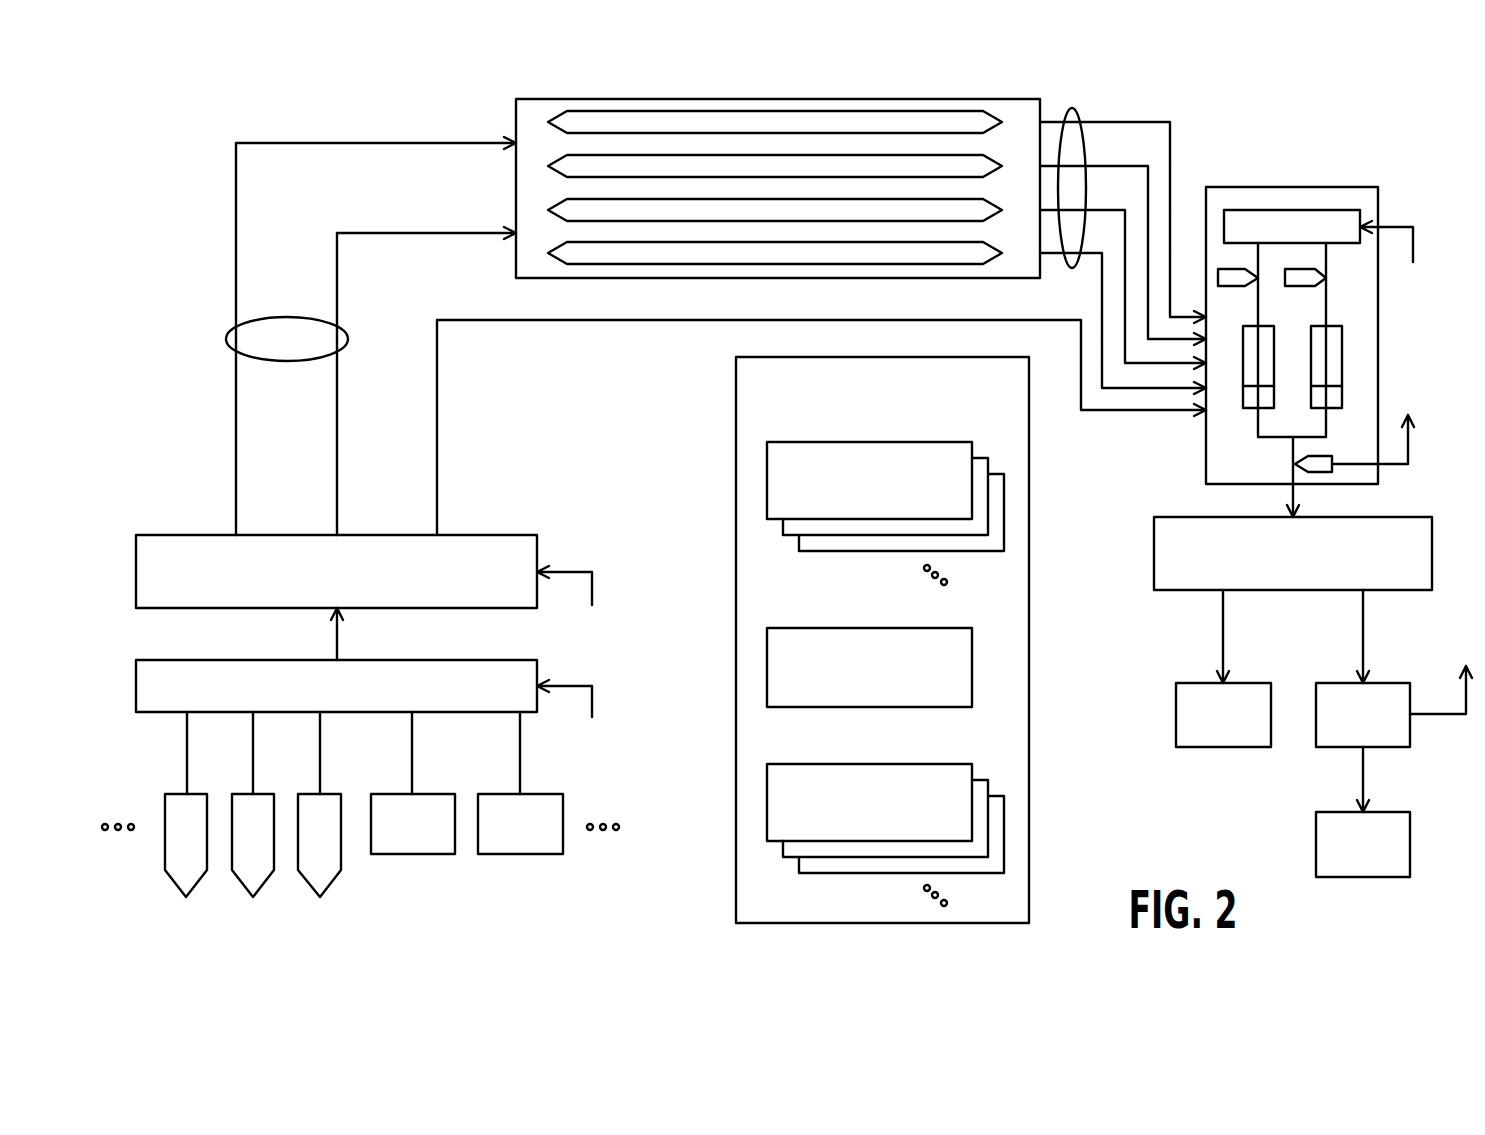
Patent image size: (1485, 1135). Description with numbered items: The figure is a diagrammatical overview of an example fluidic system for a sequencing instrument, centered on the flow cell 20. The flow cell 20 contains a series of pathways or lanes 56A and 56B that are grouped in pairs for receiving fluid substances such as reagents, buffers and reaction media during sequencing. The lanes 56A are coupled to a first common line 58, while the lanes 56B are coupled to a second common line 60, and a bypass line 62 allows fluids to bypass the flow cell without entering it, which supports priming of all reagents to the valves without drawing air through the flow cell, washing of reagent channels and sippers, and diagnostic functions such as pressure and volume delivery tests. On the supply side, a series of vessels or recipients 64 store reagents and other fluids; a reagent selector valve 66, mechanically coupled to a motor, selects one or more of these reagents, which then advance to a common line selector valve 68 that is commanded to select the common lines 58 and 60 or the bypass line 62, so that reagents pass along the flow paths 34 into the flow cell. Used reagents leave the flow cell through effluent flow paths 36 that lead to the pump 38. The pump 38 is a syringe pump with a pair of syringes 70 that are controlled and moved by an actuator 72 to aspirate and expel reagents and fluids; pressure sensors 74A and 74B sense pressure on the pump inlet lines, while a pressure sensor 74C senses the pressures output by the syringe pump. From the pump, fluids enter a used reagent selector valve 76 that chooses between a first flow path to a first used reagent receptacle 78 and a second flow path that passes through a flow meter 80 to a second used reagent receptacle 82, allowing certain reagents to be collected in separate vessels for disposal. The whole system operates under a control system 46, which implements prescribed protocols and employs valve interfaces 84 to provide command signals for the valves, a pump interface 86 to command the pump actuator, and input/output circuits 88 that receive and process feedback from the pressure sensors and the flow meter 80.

The flow cell 20 is at (778, 188).
The lanes 56A is at (777, 153).
The lanes 56B is at (777, 223).
The first common line 58 is at (372, 143).
The second common line 60 is at (418, 233).
The bypass line 62 is at (517, 320).
The flow paths 34 is at (226, 339).
The effluent flow paths 36 is at (1076, 268).
The pump 38 is at (1340, 334).
The actuator 72 is at (1335, 210).
The pressure sensor 74A is at (1228, 286).
The pressure sensor 74B is at (1302, 268).
The pressure sensor 74C is at (1318, 472).
The syringes 70 is at (1342, 357).
The used reagent selector valve 76 is at (1154, 553).
The first used reagent receptacle 78 is at (1225, 747).
The flow meter 80 is at (1340, 683).
The second used reagent receptacle 82 is at (1410, 843).
The control system 46 is at (906, 640).
The valve interfaces 84 is at (870, 442).
The pump interface 86 is at (870, 628).
The input/output circuits 88 is at (870, 764).
The common line selector valve 68 is at (136, 572).
The reagent selector valve 66 is at (136, 685).
The vessels or recipients 64 is at (187, 897).